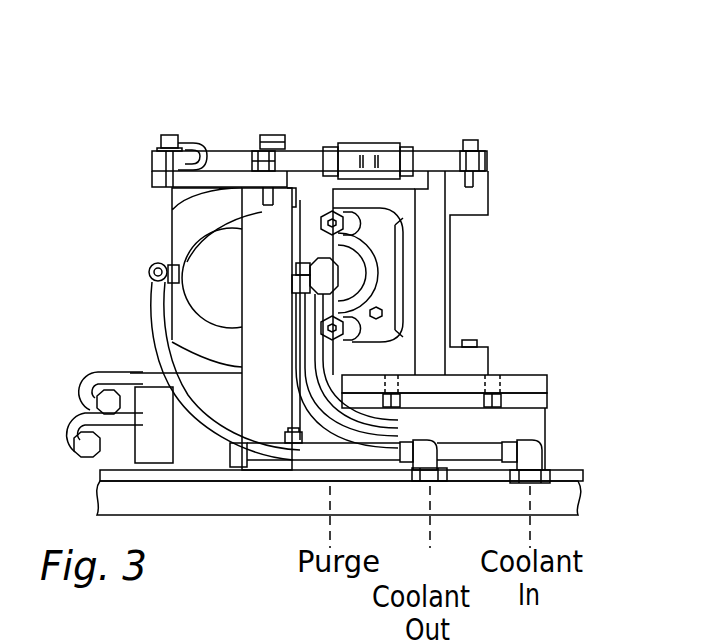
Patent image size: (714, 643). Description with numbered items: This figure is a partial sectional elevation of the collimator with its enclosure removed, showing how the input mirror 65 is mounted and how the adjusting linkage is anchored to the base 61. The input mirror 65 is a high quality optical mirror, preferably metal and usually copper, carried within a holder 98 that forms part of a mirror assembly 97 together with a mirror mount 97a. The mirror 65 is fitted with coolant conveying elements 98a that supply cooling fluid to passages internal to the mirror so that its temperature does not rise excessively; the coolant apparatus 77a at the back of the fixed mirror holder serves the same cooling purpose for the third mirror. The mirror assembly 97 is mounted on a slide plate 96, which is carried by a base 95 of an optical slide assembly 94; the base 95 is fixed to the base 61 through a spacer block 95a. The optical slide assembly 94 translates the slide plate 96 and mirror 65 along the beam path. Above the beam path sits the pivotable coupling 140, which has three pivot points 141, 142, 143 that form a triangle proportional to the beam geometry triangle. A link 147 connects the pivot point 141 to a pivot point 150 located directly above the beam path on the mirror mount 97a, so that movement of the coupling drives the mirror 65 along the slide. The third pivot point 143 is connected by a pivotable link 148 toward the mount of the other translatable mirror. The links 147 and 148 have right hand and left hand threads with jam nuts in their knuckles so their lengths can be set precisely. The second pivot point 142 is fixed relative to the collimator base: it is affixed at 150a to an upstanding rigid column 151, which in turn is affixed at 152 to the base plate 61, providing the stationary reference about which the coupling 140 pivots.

The base 61 is at (578, 500).
The input mirror 65 is at (371, 266).
The coolant apparatus 77a is at (202, 298).
The optical slide assembly 94 is at (460, 387).
The base 95 is at (538, 402).
The spacer block 95a is at (538, 430).
The slide plate 96 is at (526, 385).
The mirror assembly 97 is at (472, 253).
The mirror mount 97a is at (470, 358).
The holder 98 is at (400, 238).
The coolant conveying elements 98a is at (308, 258).
The pivotable coupling 140 is at (152, 180).
The pivot point 141 is at (275, 135).
The pivot point 142 is at (254, 163).
The pivot point 143 is at (163, 137).
The link 147 is at (398, 147).
The pivotable link 148 is at (208, 145).
The pivot point 150 is at (469, 141).
The attachment point 150a is at (172, 252).
The rigid column 151 is at (258, 398).
The attachment point 152 is at (293, 432).